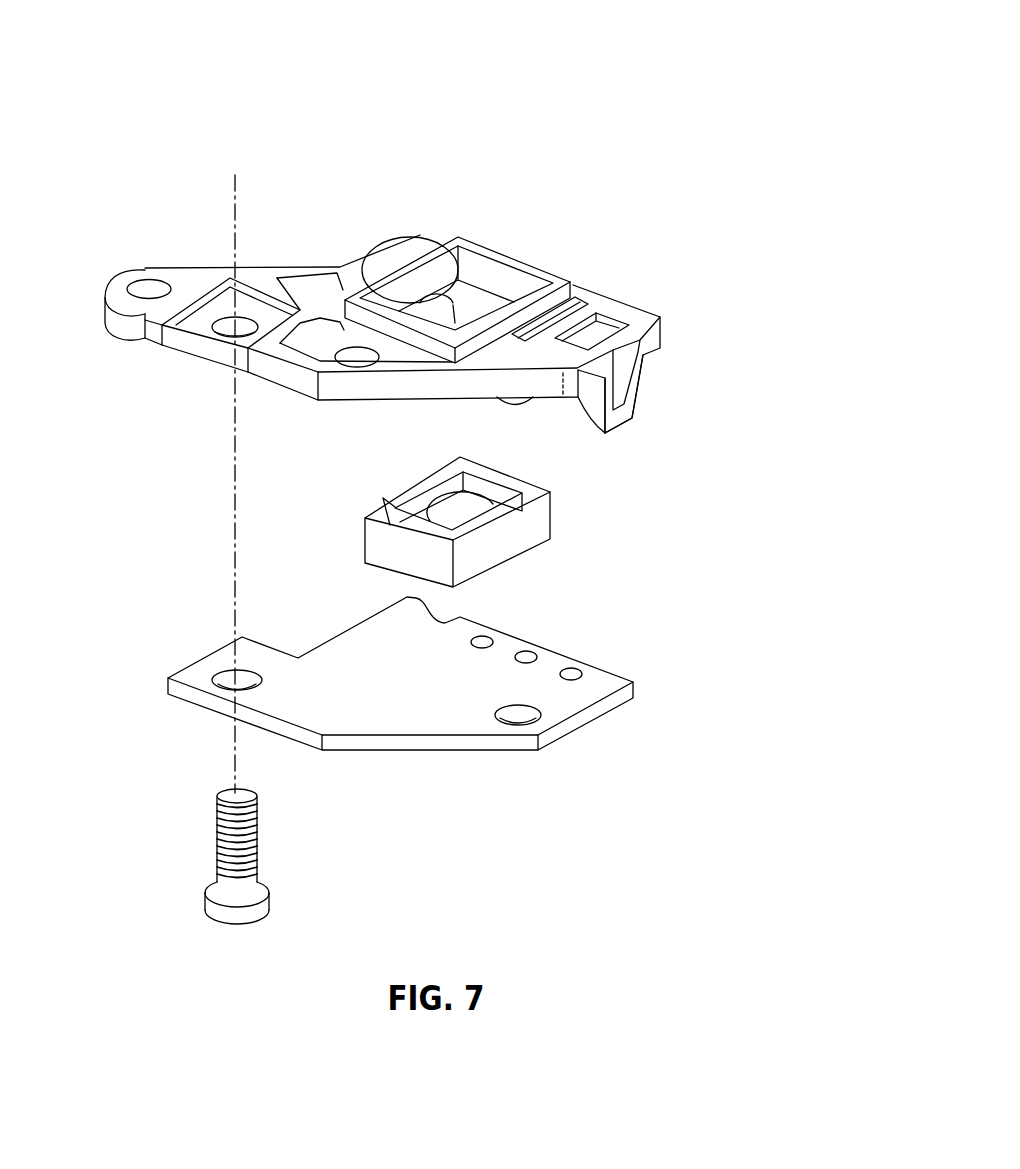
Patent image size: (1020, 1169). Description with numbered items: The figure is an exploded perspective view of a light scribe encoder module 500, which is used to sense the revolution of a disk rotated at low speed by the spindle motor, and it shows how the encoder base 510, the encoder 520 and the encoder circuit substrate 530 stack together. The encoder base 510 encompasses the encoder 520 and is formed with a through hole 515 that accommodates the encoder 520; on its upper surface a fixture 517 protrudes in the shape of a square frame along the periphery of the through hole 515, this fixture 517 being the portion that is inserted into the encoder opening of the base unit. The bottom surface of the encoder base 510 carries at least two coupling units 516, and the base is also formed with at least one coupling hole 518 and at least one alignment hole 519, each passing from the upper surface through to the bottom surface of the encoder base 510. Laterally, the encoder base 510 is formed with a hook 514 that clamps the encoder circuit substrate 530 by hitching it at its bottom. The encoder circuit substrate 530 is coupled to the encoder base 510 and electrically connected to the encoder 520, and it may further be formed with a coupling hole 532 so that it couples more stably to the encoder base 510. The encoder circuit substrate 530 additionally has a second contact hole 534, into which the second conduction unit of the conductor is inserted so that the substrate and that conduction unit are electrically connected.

The light scribe encoder module 500 is at (500, 181).
The encoder base 510 is at (641, 298).
The hook 514 is at (632, 418).
The through hole 515 is at (383, 263).
The coupling units 516 is at (452, 300).
The fixture 517 is at (414, 333).
The coupling hole 518 is at (230, 318).
The alignment hole 519 is at (148, 291).
The encoder 520 is at (556, 530).
The encoder circuit substrate 530 is at (537, 753).
The coupling hole 532 is at (228, 677).
The second contact hole 534 is at (573, 672).